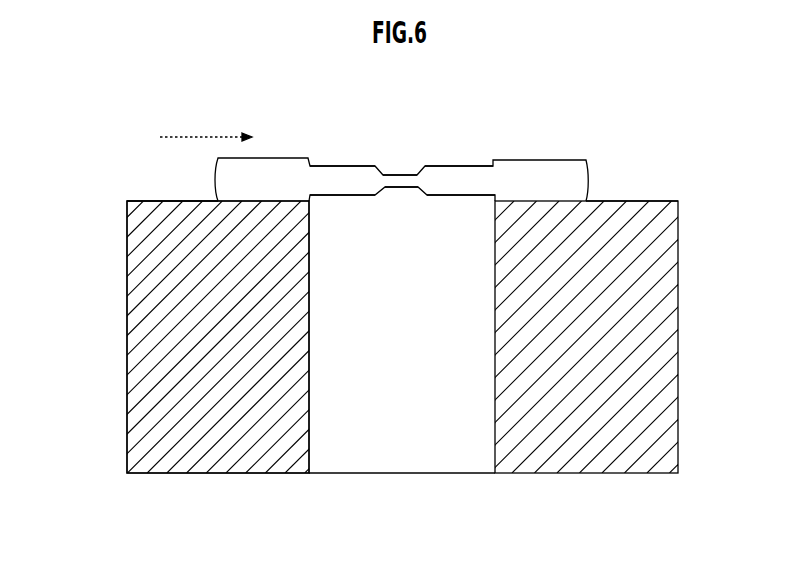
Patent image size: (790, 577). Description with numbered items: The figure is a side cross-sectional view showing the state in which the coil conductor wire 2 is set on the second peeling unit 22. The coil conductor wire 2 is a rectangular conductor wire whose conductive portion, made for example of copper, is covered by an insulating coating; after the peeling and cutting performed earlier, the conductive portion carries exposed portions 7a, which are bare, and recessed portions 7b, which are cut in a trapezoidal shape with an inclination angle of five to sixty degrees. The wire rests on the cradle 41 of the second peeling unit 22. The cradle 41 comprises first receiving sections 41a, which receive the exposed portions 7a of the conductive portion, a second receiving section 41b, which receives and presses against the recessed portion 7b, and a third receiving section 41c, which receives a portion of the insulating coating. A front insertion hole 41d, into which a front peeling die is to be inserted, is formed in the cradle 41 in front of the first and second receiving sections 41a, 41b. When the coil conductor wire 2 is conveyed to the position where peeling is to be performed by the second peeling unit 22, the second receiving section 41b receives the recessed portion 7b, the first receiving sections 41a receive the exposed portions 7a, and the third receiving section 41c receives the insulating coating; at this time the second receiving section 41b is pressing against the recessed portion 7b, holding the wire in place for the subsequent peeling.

The coil conductor wire 2 is at (540, 178).
The exposed portions 7a is at (367, 184).
The recessed portions 7b is at (415, 183).
The second peeling unit 22 is at (123, 195).
The cradle 41 is at (593, 450).
The first receiving sections 41a is at (339, 197).
The second receiving section 41b is at (399, 189).
The third receiving section 41c is at (172, 201).
The front insertion hole 41d is at (385, 446).